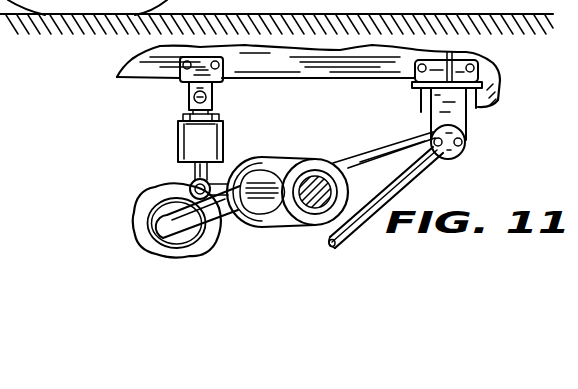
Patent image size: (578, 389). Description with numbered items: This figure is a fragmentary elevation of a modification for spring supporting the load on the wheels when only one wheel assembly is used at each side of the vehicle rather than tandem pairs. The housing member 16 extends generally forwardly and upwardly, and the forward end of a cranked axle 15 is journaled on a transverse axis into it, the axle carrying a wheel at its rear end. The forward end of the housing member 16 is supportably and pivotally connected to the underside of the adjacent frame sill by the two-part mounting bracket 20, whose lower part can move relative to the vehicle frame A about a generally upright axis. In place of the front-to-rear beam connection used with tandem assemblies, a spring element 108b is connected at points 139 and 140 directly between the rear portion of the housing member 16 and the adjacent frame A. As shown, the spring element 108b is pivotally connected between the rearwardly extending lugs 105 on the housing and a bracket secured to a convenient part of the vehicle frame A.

The vehicle frame A is at (117, 68).
The connection point 140 is at (211, 98).
The spring element 108b is at (172, 158).
The connection point 139 is at (190, 186).
The lugs 105 is at (218, 178).
The cranked axle 15 is at (176, 222).
The mounting bracket 20 is at (411, 97).
The housing member 16 is at (358, 150).